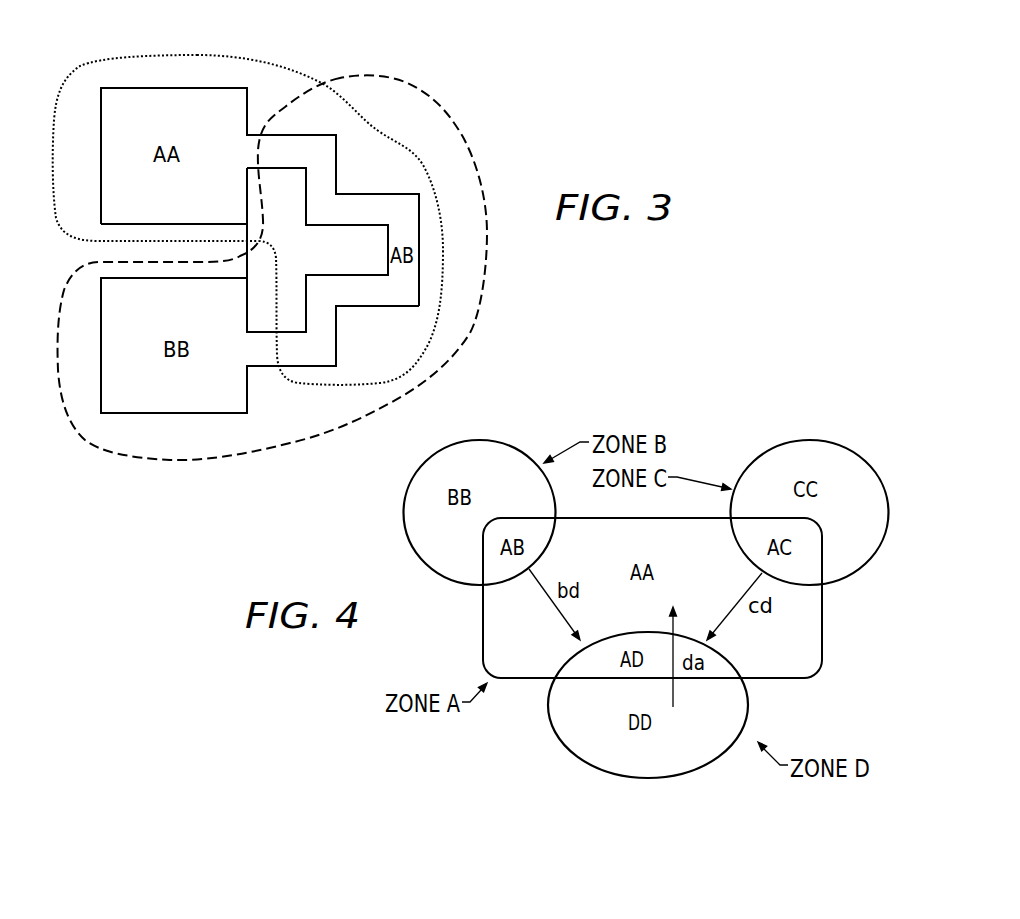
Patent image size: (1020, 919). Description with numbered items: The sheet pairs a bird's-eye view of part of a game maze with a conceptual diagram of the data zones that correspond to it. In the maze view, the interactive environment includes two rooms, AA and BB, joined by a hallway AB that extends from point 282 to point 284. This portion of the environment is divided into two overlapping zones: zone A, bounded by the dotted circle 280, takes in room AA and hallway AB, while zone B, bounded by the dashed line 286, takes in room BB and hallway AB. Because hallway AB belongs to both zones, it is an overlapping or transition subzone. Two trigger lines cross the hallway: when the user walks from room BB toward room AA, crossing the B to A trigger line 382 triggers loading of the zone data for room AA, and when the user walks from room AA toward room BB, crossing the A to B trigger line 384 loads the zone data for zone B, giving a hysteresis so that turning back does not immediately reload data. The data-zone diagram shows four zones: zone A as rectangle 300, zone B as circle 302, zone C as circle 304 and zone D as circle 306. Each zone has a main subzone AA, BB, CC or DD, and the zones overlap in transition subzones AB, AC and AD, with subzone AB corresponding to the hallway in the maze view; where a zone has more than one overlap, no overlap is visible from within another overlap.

In FIG. 3, the dotted circle 280 is at (248, 197).
In FIG. 3, the point 282 is at (260, 197).
In FIG. 3, the point 284 is at (260, 318).
In FIG. 3, the dashed line 286 is at (272, 281).
In FIG. 3, the B to A trigger line 382 is at (325, 203).
In FIG. 3, the A to B trigger line 384 is at (326, 256).
In FIG. 4, the rectangle 300 is at (632, 636).
In FIG. 4, the circle 302 is at (487, 491).
In FIG. 4, the circle 304 is at (810, 491).
In FIG. 4, the circle 306 is at (652, 719).